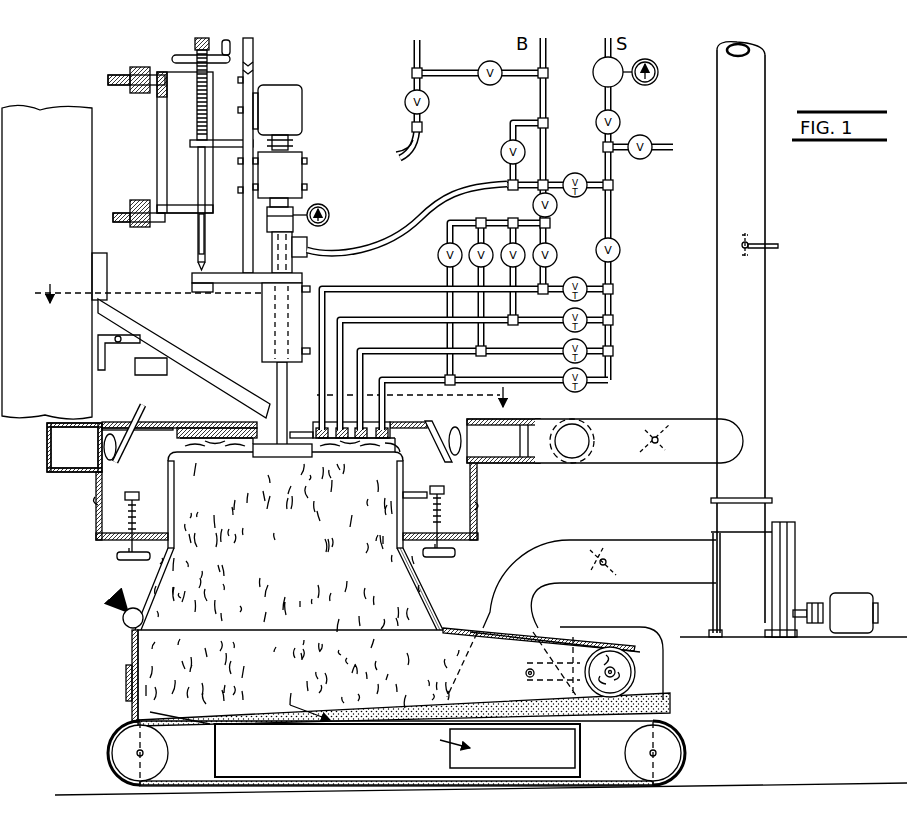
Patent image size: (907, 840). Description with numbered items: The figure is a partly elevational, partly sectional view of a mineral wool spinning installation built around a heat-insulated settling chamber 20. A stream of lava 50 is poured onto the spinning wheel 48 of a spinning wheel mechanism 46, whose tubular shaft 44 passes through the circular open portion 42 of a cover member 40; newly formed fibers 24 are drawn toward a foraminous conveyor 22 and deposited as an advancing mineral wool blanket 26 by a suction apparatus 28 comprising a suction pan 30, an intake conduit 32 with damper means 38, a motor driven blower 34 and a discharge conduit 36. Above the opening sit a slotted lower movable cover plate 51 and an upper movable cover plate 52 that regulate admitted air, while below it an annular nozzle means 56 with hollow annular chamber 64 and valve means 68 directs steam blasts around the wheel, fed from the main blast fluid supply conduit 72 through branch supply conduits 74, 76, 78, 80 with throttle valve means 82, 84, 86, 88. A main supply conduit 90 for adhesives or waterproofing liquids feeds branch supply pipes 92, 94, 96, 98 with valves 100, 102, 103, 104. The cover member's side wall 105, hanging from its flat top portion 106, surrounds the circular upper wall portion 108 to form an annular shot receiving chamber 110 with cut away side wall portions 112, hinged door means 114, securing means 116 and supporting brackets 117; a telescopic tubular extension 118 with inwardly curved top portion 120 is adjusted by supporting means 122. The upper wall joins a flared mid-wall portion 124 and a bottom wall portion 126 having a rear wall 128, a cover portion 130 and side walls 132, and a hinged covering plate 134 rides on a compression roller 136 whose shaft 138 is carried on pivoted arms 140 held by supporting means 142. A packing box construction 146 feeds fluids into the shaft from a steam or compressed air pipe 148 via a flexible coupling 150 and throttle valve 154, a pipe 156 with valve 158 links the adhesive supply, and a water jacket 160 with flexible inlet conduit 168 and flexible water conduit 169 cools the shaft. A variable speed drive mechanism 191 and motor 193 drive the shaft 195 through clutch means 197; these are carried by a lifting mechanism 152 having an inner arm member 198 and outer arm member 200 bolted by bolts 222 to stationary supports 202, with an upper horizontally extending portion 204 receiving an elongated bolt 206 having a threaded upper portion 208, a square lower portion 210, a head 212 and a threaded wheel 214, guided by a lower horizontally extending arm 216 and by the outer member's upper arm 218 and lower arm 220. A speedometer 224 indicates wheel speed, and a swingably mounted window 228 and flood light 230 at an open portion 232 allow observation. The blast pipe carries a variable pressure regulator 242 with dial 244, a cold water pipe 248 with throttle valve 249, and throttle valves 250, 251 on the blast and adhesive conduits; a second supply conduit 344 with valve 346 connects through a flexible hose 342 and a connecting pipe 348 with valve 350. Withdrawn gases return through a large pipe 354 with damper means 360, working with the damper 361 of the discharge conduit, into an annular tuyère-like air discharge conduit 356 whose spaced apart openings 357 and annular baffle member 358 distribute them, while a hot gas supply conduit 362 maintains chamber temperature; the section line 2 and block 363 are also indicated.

The settling chamber 20 is at (152, 578).
The foraminous conveyor 22 is at (187, 726).
The newly formed fibers 24 is at (302, 585).
The mineral wool blanket 26 is at (412, 700).
The suction apparatus 28 is at (792, 528).
The suction pan 30 is at (246, 778).
The intake conduit 32 is at (537, 768).
The motor driven blower 34 is at (716, 531).
The discharge conduit 36 is at (766, 355).
The damper means 38 is at (612, 545).
The cover member 40 is at (128, 421).
The circular open portion 42 is at (258, 421).
The tubular shaft 44 is at (287, 400).
The spinning wheel mechanism 46 is at (267, 458).
The spinning wheel 48 is at (312, 457).
The stream of lava 50 is at (266, 400).
The lower movable cover plate 51 is at (301, 434).
The upper movable cover plate 52 is at (313, 422).
The annular nozzle means 56 is at (178, 427).
The hollow annular chamber 64 is at (390, 430).
The valve means 68 is at (390, 453).
The main blast fluid supply conduit 72 is at (612, 214).
The branch supply conduit 74 is at (364, 289).
The branch supply conduit 76 is at (362, 320).
The branch supply conduit 78 is at (372, 351).
The branch supply conduit 80 is at (395, 381).
The throttle valve means 82 is at (575, 277).
The throttle valve means 84 is at (565, 315).
The throttle valve means 86 is at (565, 346).
The throttle valve means 88 is at (565, 375).
The main supply conduit 90 is at (547, 52).
The branch supply pipe 92 is at (548, 239).
The branch supply pipe 94 is at (514, 242).
The branch supply pipe 96 is at (482, 242).
The branch supply pipe 98 is at (444, 254).
The valve 100 is at (557, 255).
The valve 102 is at (515, 264).
The valve 103 is at (482, 265).
The valve 104 is at (447, 268).
The side wall 105 is at (47, 445).
The flat top portion 106 is at (144, 410).
The circular upper wall portion 108 is at (168, 506).
The annular shot receiving chamber 110 is at (107, 497).
The cut away side wall portions 112 is at (102, 517).
The hinged door means 114 is at (96, 522).
The securing means 116 is at (95, 502).
The brackets 117 is at (145, 563).
The tubular extension 118 is at (404, 470).
The inwardly curved top portion 120 is at (185, 455).
The adjustably mounted supporting means 122 is at (117, 555).
The mid-wall portion 124 is at (438, 594).
The bottom wall portion 126 is at (131, 638).
The rear wall 128 is at (131, 650).
The cover portion 130 is at (470, 630).
The side walls 132 is at (622, 627).
The covering plate 134 is at (583, 636).
The compression roller 136 is at (636, 663).
The shaft 138 is at (616, 673).
The pivoted arms 140 is at (562, 660).
The supporting means 142 is at (526, 668).
The packing box construction 146 is at (307, 243).
The steam or compressed air pipe 148 is at (570, 173).
The flexible coupling 150 is at (394, 248).
The lifting mechanism 152 is at (157, 108).
The throttle valve 154 is at (610, 181).
The pipe 156 is at (508, 125).
The valve 158 is at (501, 155).
The water jacket 160 is at (262, 312).
The flexible inlet conduit 168 is at (310, 342).
The flexible water conduit 169 is at (306, 285).
The variable speed drive mechanism 191 is at (302, 162).
The motor 193 is at (302, 108).
The shaft of the speed drive mechanism 195 is at (293, 212).
The clutch means 197 is at (308, 213).
The inner arm member 198 is at (160, 134).
The outer arm member 200 is at (242, 185).
The stationary supports 202 is at (113, 76).
The upper horizontally extending portion 204 is at (176, 60).
The elongated bolt 206 is at (198, 166).
The threaded upper portion 208 is at (207, 105).
The square lower portion 210 is at (198, 221).
The head 212 is at (196, 283).
The internally threaded disk or wheel 214 is at (253, 48).
The lower horizontally extending arm 216 is at (173, 215).
The upper arm 218 is at (226, 140).
The lower arm 220 is at (213, 291).
The bolts 222 is at (139, 67).
The speedometer 224 is at (330, 212).
The swingably mounted window 228 is at (126, 693).
The flood light 230 is at (123, 620).
The open portion 232 is at (132, 597).
The variable pressure regulator 242 is at (618, 82).
The dial 244 is at (658, 65).
The cold water pipe 248 is at (655, 139).
The throttle valve 249 is at (655, 152).
The throttle valve 250 is at (620, 250).
The throttle valve 251 is at (557, 206).
The flexible hose 342 is at (412, 140).
The conduit 344 is at (413, 48).
The valve 346 is at (405, 97).
The connecting pipe 348 is at (447, 78).
The valve 350 is at (490, 61).
The large pipe 354 is at (699, 417).
The annular tuyère-like air discharge conduit 356 is at (512, 419).
The spaced apart openings 357 is at (112, 460).
The annular baffle member 358 is at (441, 421).
The damper means 360 is at (652, 430).
The damper 361 is at (748, 244).
The hot air or hot gas supply conduit 362 is at (558, 461).
The block 363 is at (54, 262).
The section line 2 is at (270, 346).